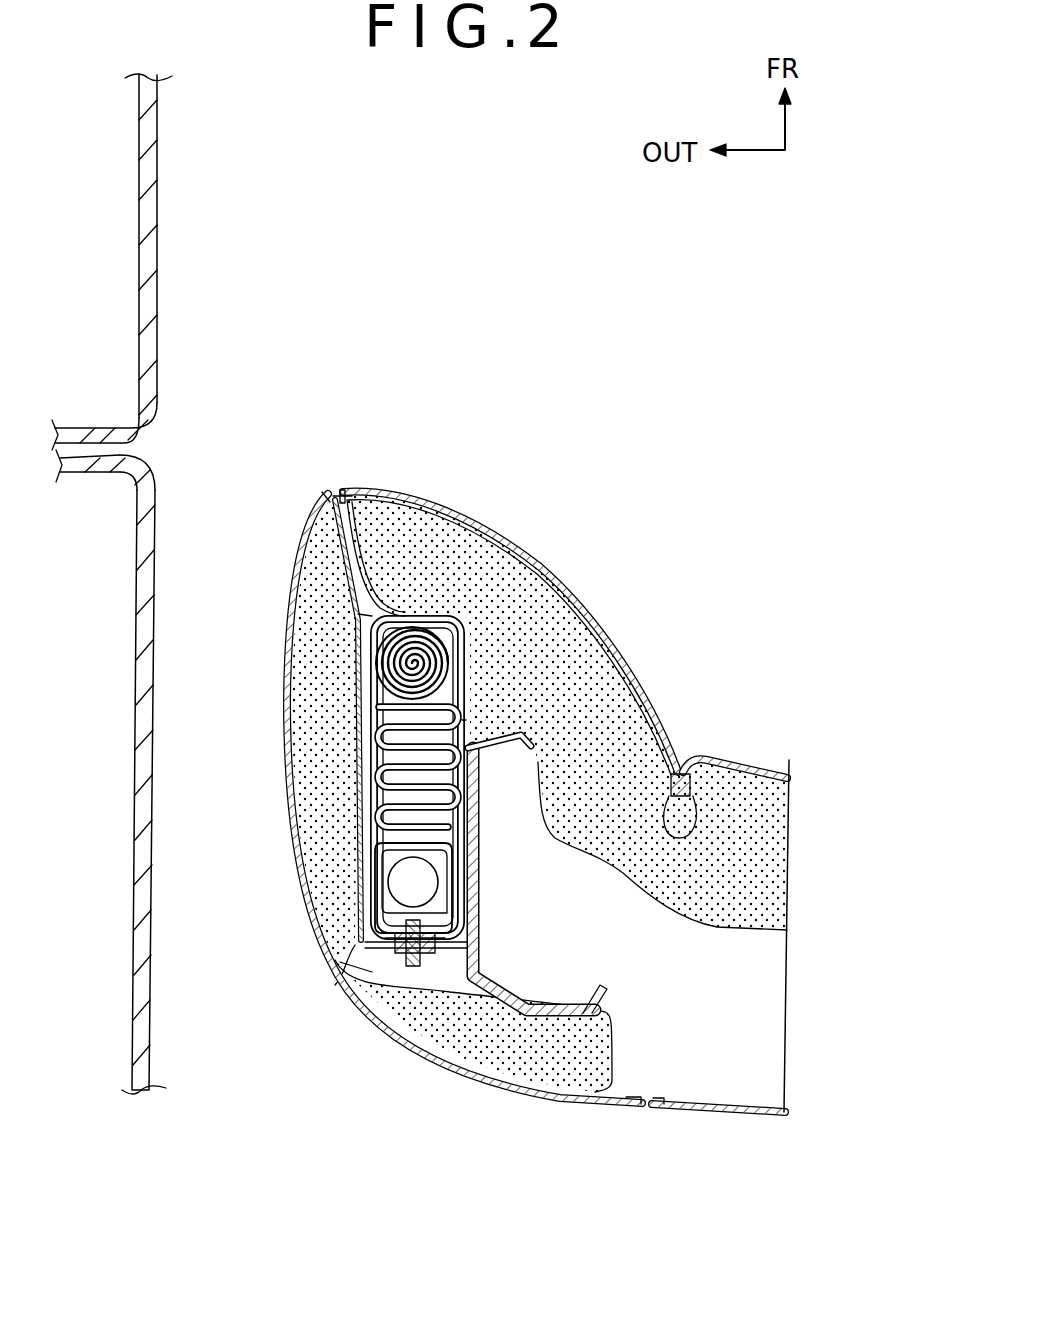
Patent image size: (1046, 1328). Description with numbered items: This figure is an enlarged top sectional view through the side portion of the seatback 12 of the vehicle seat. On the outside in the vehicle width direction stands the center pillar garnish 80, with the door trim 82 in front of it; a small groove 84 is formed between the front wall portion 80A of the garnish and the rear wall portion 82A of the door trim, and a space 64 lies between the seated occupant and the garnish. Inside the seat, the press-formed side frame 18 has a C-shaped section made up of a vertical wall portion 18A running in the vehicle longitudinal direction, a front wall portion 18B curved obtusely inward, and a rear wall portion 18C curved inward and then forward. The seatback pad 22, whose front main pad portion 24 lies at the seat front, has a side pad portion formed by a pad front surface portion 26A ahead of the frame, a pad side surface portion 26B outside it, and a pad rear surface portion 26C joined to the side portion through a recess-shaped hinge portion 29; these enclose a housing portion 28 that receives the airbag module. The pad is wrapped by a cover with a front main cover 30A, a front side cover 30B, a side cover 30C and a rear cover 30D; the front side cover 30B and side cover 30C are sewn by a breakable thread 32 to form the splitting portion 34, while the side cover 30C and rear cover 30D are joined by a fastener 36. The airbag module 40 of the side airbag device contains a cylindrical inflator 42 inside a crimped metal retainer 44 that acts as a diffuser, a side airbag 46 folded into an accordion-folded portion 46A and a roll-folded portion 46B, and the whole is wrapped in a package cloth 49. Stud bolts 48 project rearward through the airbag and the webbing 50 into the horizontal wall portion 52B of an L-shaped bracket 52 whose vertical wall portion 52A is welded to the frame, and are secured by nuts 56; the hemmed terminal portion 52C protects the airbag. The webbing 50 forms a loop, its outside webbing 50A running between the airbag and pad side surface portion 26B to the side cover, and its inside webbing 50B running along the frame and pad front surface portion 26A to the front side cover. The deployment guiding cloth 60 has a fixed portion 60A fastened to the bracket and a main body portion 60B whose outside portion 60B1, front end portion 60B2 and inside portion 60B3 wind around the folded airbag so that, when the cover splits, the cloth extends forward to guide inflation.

The seatback 12 is at (675, 1140).
The side frame 18 is at (490, 1005).
The vertical wall portion 18A is at (482, 845).
The front wall portion 18B is at (504, 750).
The rear wall portion 18C is at (580, 1005).
The seatback pad 22 is at (795, 830).
The front main pad portion 24 is at (772, 768).
The pad front surface portion 26A is at (553, 582).
The pad side surface portion 26B is at (305, 704).
The pad rear surface portion 26C is at (582, 1080).
The housing portion 28 is at (356, 830).
The hinge portion 29 is at (345, 965).
The front main cover 30A is at (745, 760).
The front side cover 30B is at (608, 634).
The side cover 30C is at (294, 660).
The rear cover 30D is at (756, 1115).
The thread 32 is at (348, 489).
The splitting portion 34 is at (330, 492).
The fastener 36 is at (648, 1095).
The airbag module 40 is at (352, 756).
The inflator 42 is at (366, 905).
The retainer 44 is at (368, 935).
The side airbag 46 is at (455, 628).
The accordion-folded portion 46A is at (358, 790).
The roll-folded portion 46B is at (430, 640).
The stud bolt 48 is at (410, 968).
The package cloth 49 is at (352, 592).
The webbing 50 is at (567, 606).
The outside webbing 50A is at (336, 546).
The inside webbing 50B is at (540, 562).
The bracket 52 is at (470, 888).
The vertical wall portion 52A is at (466, 906).
The horizontal wall portion 52B is at (456, 946).
The terminal portion 52C is at (382, 952).
The nut 56 is at (400, 955).
The deployment guiding cloth 60 is at (490, 602).
The fixed portion 60A is at (425, 962).
The main body portion 60B is at (358, 604).
The outside portion 60B1 is at (365, 875).
The front end portion 60B2 is at (406, 612).
The inside portion 60B3 is at (466, 735).
The space 64 is at (236, 765).
The center pillar garnish 80 is at (150, 1048).
The front wall portion 80A is at (88, 478).
The door trim 82 is at (160, 244).
The rear wall portion 82A is at (78, 430).
The groove 84 is at (118, 452).